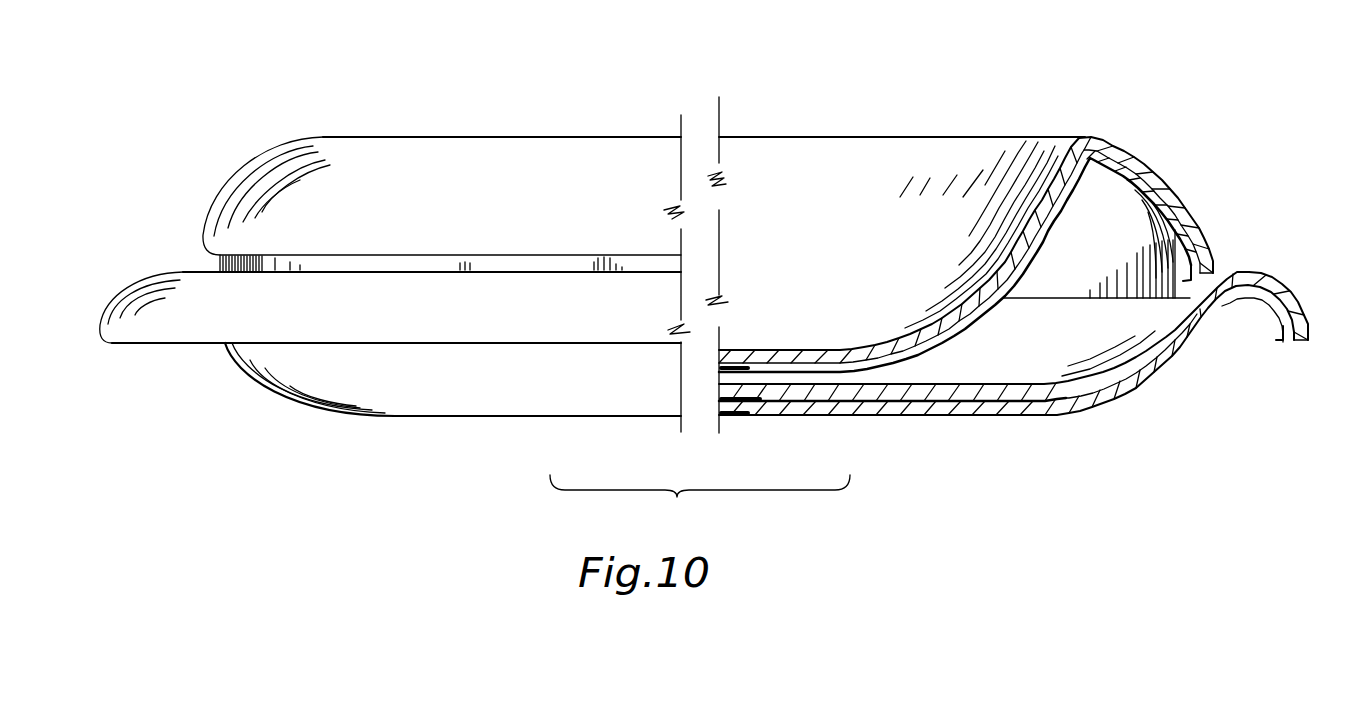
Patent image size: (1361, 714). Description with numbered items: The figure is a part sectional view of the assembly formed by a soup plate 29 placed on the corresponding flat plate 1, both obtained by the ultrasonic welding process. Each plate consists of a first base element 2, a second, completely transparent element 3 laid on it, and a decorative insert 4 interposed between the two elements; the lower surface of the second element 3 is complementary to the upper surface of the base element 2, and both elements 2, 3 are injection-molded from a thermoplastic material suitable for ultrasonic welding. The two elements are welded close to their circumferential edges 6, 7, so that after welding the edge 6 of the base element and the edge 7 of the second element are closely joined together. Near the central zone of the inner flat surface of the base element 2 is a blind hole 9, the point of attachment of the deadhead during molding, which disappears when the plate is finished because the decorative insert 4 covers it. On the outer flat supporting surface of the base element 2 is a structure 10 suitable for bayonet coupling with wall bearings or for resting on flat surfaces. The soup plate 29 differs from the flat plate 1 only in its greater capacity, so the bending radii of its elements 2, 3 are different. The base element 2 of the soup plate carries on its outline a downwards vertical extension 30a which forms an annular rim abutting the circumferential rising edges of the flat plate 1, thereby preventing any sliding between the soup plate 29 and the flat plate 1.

The flat plate 1 is at (1115, 430).
The first base element 2 is at (1073, 213).
The second element 3 is at (1068, 139).
The decorative insert 4 is at (807, 356).
The circumferential edge 6 is at (1184, 258).
The circumferential edge 7 is at (1214, 240).
The blind hole 9 is at (758, 366).
The structure 10 is at (722, 420).
The soup plate 29 is at (914, 136).
The downwards vertical extension 30a is at (218, 263).